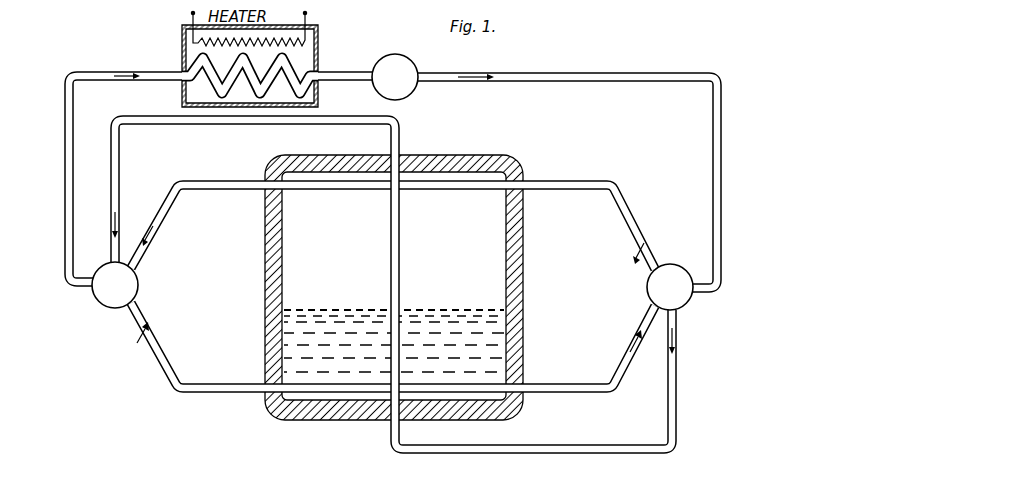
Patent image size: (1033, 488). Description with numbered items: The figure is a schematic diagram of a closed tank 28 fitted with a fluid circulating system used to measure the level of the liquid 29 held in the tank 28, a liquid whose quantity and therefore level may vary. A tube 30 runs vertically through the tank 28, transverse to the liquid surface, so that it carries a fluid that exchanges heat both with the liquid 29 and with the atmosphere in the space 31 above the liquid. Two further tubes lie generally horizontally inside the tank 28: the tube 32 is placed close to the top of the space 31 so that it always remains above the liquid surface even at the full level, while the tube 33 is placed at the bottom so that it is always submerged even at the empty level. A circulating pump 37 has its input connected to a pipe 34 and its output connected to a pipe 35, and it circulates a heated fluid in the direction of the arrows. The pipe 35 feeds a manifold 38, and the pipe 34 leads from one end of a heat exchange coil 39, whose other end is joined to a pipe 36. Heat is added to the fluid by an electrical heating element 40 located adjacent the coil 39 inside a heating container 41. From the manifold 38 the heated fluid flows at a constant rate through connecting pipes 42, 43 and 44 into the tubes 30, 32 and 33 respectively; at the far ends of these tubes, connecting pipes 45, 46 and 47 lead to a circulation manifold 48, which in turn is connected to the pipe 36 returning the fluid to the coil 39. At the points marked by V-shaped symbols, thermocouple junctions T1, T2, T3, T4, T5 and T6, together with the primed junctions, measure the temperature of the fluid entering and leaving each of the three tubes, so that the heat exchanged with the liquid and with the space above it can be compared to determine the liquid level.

The tank 28 is at (517, 296).
The liquid 29 is at (318, 310).
The tube 30 is at (400, 252).
The space 31 is at (351, 219).
The tube 32 is at (451, 191).
The tube 33 is at (318, 393).
The pipe 34 is at (338, 81).
The pipe 35 is at (562, 72).
The pipe 36 is at (67, 115).
The circulating pump 37 is at (398, 56).
The manifold 38 is at (672, 267).
The heat exchange coil 39 is at (290, 68).
The electrical heating element 40 is at (199, 41).
The heating container 41 is at (186, 94).
The connecting pipe 42 is at (678, 352).
The connecting pipe 43 is at (633, 217).
The connecting pipe 44 is at (627, 370).
The connecting pipe 45 is at (260, 124).
The connecting pipe 46 is at (158, 232).
The connecting pipe 47 is at (153, 358).
The circulation manifold 48 is at (100, 306).
The thermocouple junction T1 is at (408, 146).
The thermocouple junction T2 is at (607, 196).
The thermocouple junction T3 is at (194, 175).
The thermocouple junction T4 is at (197, 399).
The thermocouple junction T5 is at (408, 425).
The thermocouple junction T6 is at (601, 399).